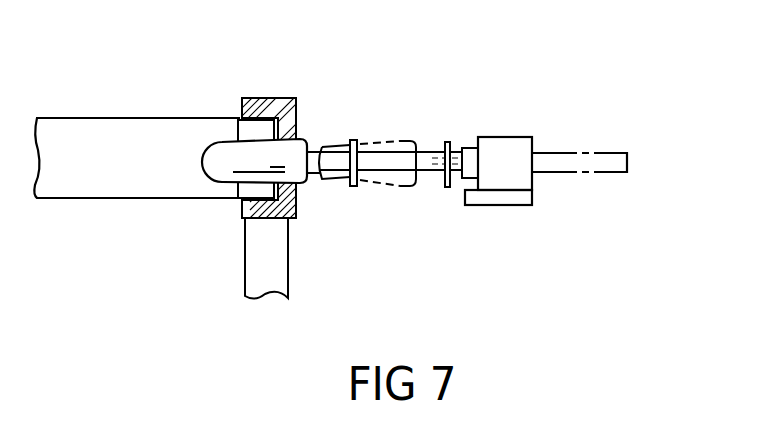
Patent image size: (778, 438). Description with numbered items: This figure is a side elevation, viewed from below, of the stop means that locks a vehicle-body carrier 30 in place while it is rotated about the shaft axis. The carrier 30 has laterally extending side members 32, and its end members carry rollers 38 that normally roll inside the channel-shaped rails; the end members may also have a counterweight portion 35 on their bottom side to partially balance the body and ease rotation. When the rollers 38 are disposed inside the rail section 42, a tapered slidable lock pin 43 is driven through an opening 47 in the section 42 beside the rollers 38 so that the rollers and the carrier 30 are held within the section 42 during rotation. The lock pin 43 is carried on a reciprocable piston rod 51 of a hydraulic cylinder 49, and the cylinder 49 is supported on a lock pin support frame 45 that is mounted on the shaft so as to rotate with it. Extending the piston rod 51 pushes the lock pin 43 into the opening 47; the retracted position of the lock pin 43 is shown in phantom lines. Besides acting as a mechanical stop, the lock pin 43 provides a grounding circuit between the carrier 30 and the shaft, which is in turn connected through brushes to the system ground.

The carrier 30 is at (124, 104).
The side member 32 is at (118, 178).
The counterweight portion 35 is at (272, 256).
The roller 38 is at (252, 128).
The rail section 42 is at (264, 98).
The lock pin 43 is at (255, 163).
The lock pin support frame 45 is at (505, 197).
The opening 47 is at (311, 145).
The hydraulic cylinder 49 is at (507, 152).
The piston rod 51 is at (432, 150).